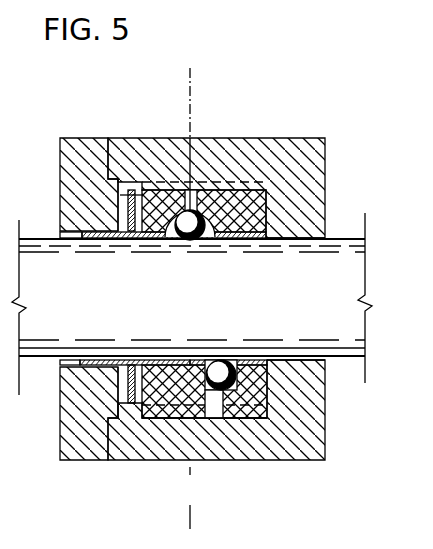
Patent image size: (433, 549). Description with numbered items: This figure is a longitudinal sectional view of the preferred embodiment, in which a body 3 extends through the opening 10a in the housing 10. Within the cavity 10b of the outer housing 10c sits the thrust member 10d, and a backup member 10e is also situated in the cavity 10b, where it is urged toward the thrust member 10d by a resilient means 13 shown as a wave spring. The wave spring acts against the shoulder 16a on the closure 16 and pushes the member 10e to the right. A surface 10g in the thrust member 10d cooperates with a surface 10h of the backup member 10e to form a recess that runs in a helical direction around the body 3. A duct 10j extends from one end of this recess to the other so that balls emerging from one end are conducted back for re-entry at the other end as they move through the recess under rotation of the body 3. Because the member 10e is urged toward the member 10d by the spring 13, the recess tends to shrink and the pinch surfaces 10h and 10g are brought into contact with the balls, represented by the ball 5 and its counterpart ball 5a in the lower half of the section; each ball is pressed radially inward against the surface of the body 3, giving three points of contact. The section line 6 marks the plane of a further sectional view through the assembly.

The body 3 is at (334, 308).
The ball 5 is at (187, 227).
The ball 5a is at (210, 400).
The section line VI-VI 6 is at (190, 68).
The housing 10 is at (285, 127).
The opening 10a is at (300, 237).
The cavity 10b is at (243, 420).
The outer housing 10c is at (239, 140).
The thrust member 10d is at (232, 200).
The backup member 10e is at (167, 197).
The surface 10g is at (239, 237).
The surface 10h is at (143, 233).
The duct 10j is at (216, 383).
The resilient means 13 is at (140, 192).
The closure 16 is at (83, 137).
The shoulder 16a is at (112, 210).